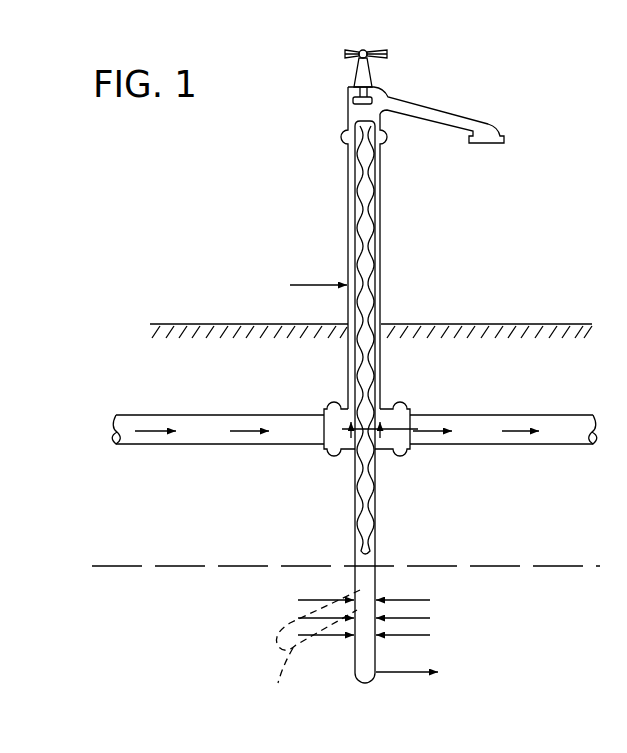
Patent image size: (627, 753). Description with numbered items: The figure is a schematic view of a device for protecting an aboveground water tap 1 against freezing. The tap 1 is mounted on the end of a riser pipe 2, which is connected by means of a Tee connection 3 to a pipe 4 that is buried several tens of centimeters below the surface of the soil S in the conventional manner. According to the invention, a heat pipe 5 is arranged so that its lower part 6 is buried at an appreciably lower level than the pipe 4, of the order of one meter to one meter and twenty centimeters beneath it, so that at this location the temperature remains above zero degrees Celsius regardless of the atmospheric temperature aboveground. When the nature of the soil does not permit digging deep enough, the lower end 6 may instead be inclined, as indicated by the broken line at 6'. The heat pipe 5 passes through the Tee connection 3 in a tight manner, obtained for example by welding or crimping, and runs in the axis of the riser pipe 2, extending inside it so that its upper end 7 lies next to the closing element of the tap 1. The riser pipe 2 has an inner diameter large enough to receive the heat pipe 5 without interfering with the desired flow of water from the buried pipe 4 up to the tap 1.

The aboveground water tap 1 is at (441, 99).
The riser pipe 2 is at (387, 247).
The Tee connection 3 is at (345, 455).
The pipe 4 is at (488, 446).
The heat pipe 5 is at (378, 550).
The lower part 6 is at (377, 636).
The inclined end 6' is at (315, 649).
The upper end 7 is at (370, 163).
The surface of the soil S is at (569, 321).